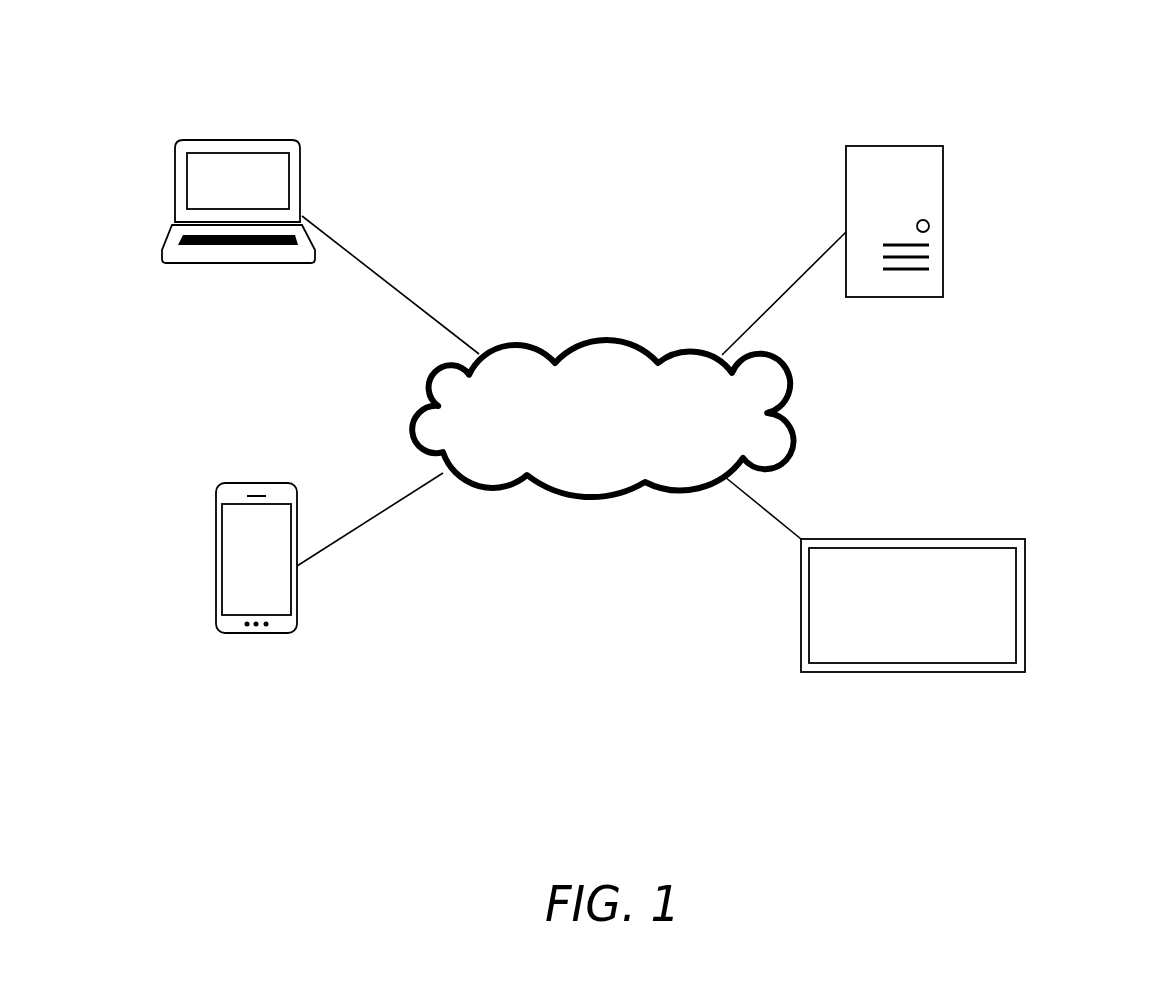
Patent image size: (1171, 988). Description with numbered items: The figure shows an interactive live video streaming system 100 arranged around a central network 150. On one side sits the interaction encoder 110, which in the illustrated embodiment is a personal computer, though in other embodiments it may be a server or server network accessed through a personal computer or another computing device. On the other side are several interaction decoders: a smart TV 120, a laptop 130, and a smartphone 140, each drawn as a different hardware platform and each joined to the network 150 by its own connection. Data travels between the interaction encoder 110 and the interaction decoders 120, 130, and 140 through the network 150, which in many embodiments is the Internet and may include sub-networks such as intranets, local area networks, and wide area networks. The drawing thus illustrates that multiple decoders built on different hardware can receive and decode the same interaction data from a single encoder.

The system 100 is at (544, 100).
The interaction encoder 110 is at (943, 199).
The smart TV 120 is at (1016, 539).
The laptop 130 is at (175, 155).
The smartphone 140 is at (216, 562).
The network 150 is at (600, 340).